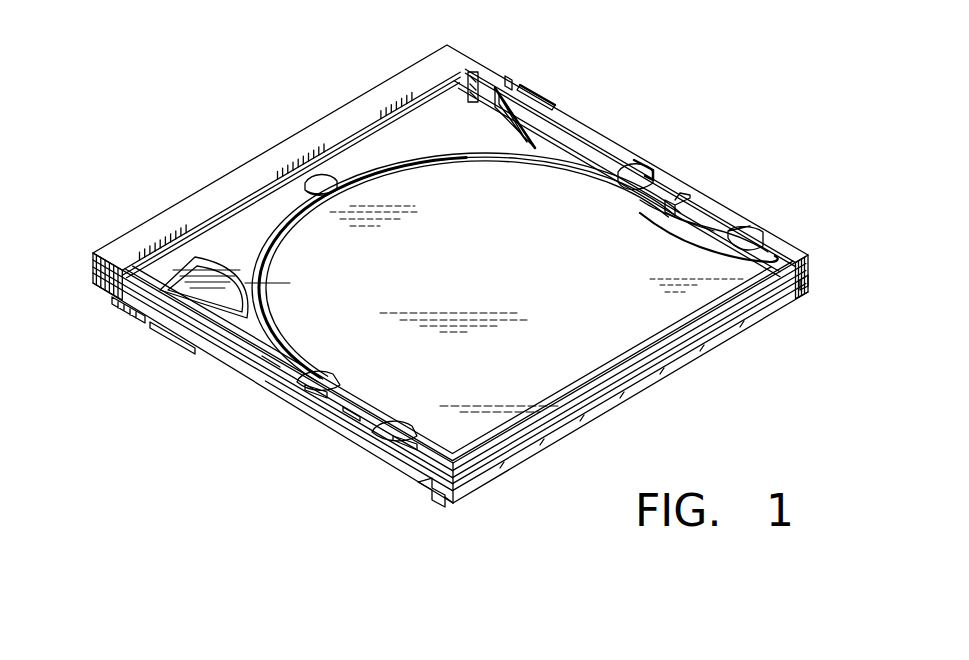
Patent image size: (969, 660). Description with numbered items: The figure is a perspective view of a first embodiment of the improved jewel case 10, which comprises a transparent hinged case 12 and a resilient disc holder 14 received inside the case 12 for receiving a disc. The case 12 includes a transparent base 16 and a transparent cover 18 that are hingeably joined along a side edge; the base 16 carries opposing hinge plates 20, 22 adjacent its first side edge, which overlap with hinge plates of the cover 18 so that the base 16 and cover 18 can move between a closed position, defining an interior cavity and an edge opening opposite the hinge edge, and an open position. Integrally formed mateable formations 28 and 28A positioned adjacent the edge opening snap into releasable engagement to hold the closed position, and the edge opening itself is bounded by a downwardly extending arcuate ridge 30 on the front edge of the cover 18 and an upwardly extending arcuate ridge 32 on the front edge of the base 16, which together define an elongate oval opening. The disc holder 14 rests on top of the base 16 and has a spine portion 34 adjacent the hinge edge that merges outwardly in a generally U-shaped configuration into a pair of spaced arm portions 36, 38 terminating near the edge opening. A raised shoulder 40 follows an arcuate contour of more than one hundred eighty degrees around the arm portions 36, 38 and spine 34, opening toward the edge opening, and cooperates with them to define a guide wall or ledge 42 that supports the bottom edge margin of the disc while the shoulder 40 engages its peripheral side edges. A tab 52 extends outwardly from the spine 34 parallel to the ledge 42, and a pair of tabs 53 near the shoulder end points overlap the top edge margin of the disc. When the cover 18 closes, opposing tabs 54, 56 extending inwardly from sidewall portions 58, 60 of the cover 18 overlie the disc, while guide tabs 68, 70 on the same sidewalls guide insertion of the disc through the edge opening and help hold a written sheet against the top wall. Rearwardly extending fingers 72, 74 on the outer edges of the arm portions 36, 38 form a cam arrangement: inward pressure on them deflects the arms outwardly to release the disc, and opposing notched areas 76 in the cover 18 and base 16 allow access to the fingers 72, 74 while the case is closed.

The jewel case 10 is at (776, 114).
The hinged case 12 is at (740, 198).
The disc holder 14 is at (412, 120).
The base 16 is at (322, 428).
The cover 18 is at (230, 343).
The hinge plate 20 is at (108, 281).
The hinge plate 22 is at (450, 50).
The mateable formation 28 is at (417, 484).
The mateable formation 28A is at (812, 284).
The arcuate ridge 30 is at (773, 283).
The arcuate ridge 32 is at (700, 353).
The spine portion 34 is at (267, 167).
The arm portion 36 is at (235, 272).
The arm portion 38 is at (622, 162).
The raised shoulder 40 is at (594, 165).
The guide wall or ledge 42 is at (387, 177).
The tab 52 is at (323, 183).
The tab 53 is at (684, 194).
The tab 54 is at (297, 378).
The tab 56 is at (648, 165).
The sidewall portion 58 is at (267, 363).
The sidewall portion 60 is at (634, 160).
The guide tab 68 is at (380, 427).
The guide tab 70 is at (737, 230).
The finger 72 is at (190, 327).
The finger 74 is at (533, 117).
The notched area 76 is at (518, 90).